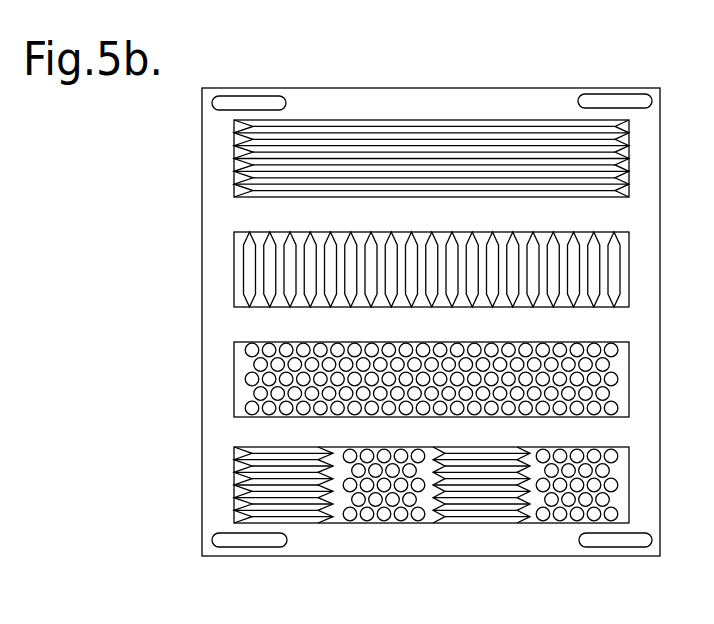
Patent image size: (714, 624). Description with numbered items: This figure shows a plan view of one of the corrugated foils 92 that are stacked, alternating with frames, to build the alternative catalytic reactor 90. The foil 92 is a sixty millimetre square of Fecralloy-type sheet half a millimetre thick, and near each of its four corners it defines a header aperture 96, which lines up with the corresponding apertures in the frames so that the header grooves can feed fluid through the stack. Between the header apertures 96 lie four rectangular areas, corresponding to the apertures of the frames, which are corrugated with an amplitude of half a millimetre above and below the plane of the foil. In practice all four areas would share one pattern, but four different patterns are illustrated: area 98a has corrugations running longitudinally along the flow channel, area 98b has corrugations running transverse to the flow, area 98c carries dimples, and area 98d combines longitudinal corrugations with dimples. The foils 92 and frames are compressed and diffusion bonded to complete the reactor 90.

The alternative reactor 90 is at (449, 71).
The corrugated foil 92 is at (378, 104).
The header apertures 96 is at (249, 104).
The area with longitudinal corrugations 98a is at (235, 157).
The area with transverse corrugations 98b is at (243, 262).
The area with dimples 98c is at (250, 378).
The area with longitudinal corrugations and dimples 98d is at (250, 484).